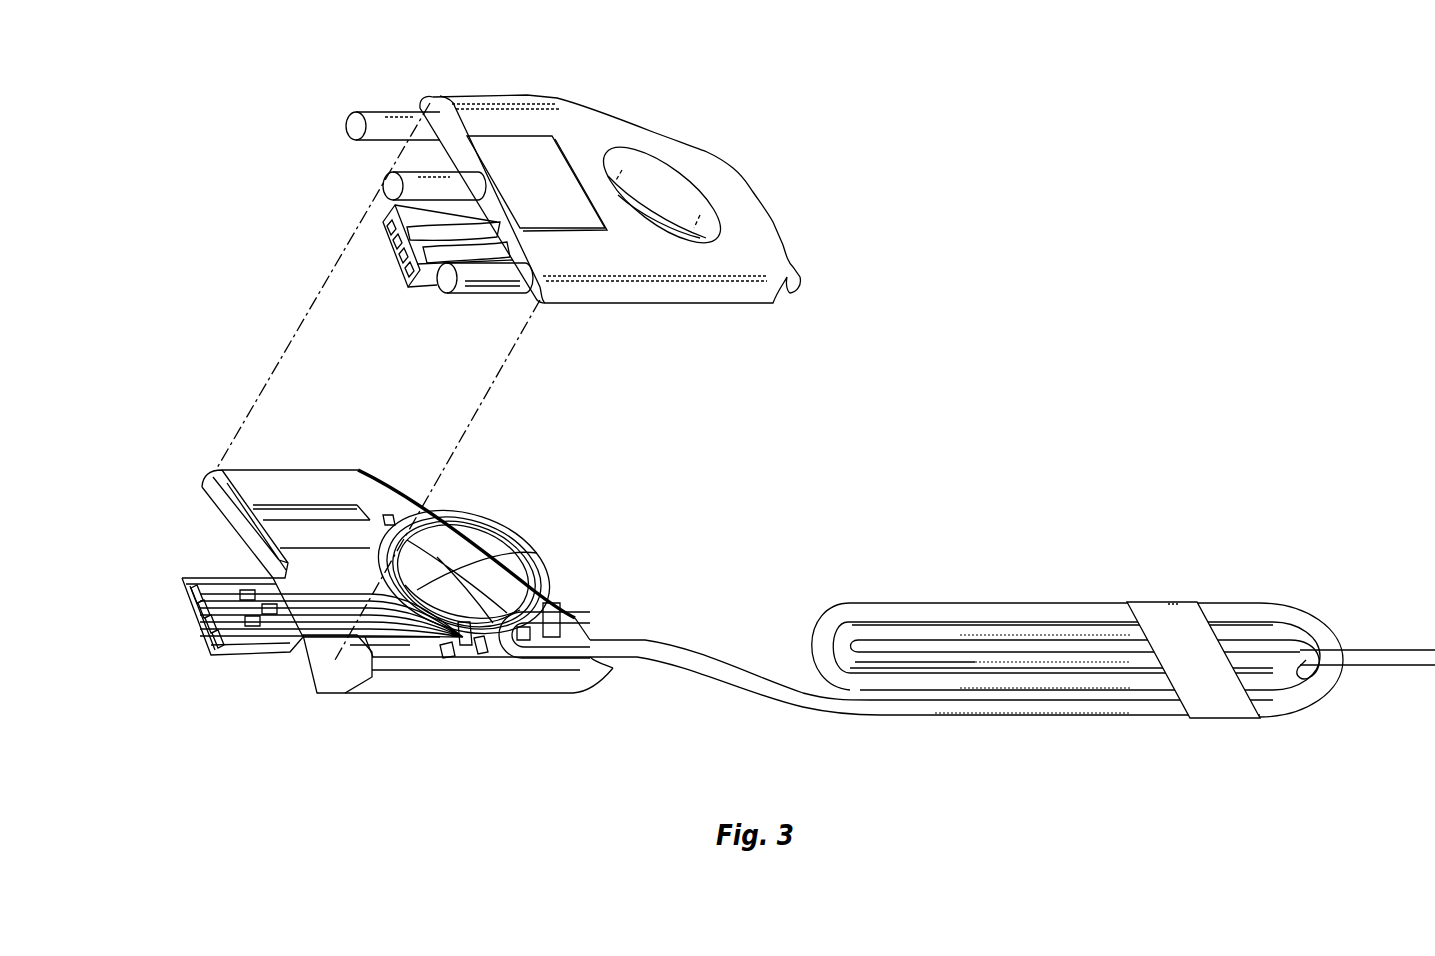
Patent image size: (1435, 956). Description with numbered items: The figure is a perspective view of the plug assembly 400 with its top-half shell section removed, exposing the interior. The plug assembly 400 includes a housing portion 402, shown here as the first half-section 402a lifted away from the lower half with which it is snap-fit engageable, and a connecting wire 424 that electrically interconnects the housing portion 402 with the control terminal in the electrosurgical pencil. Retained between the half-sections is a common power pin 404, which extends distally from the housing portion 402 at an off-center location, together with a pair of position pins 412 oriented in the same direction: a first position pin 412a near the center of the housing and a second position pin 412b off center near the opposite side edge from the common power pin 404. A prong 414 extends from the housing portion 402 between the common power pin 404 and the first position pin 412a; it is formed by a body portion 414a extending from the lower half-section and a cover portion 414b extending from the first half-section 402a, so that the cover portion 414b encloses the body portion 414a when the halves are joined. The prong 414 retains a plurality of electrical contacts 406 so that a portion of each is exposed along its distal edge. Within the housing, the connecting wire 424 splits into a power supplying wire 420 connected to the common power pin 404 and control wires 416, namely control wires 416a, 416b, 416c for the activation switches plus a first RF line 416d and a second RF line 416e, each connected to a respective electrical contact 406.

The plug assembly 400 is at (873, 490).
The housing portion 402 is at (675, 118).
The first half-section 402a is at (752, 188).
The common power pin 404 is at (493, 292).
The electrical contacts 406 is at (197, 608).
The position pins 412 is at (328, 68).
The first position pin 412a is at (348, 125).
The second position pin 412b is at (388, 183).
The prong 414 is at (195, 640).
The body portion 414a is at (220, 666).
The cover portion 414b is at (390, 258).
The control wires 416 is at (308, 570).
The control wire 416a is at (390, 514).
The control wire 416b is at (423, 505).
The control wire 416c is at (436, 530).
The first RF line 416d is at (456, 545).
The second RF line 416e is at (497, 572).
The power supplying wire 420 is at (413, 650).
The connecting wire 424 is at (656, 640).